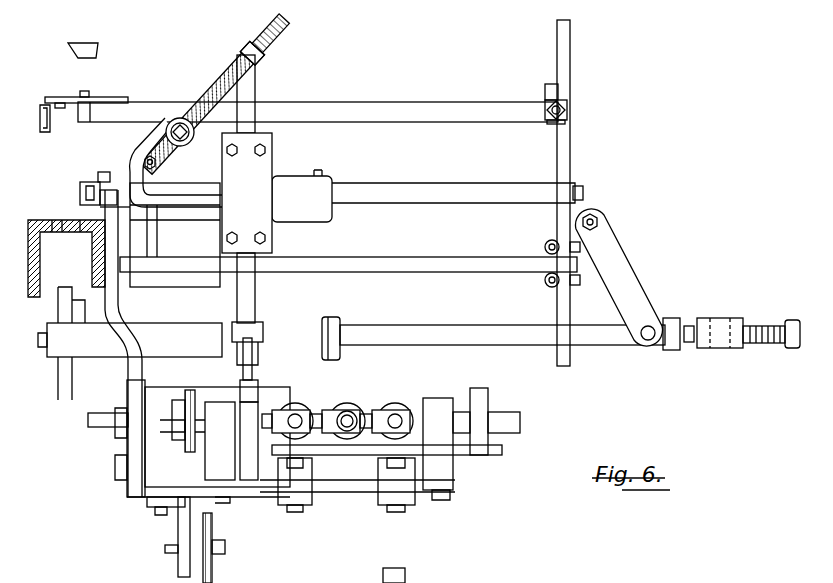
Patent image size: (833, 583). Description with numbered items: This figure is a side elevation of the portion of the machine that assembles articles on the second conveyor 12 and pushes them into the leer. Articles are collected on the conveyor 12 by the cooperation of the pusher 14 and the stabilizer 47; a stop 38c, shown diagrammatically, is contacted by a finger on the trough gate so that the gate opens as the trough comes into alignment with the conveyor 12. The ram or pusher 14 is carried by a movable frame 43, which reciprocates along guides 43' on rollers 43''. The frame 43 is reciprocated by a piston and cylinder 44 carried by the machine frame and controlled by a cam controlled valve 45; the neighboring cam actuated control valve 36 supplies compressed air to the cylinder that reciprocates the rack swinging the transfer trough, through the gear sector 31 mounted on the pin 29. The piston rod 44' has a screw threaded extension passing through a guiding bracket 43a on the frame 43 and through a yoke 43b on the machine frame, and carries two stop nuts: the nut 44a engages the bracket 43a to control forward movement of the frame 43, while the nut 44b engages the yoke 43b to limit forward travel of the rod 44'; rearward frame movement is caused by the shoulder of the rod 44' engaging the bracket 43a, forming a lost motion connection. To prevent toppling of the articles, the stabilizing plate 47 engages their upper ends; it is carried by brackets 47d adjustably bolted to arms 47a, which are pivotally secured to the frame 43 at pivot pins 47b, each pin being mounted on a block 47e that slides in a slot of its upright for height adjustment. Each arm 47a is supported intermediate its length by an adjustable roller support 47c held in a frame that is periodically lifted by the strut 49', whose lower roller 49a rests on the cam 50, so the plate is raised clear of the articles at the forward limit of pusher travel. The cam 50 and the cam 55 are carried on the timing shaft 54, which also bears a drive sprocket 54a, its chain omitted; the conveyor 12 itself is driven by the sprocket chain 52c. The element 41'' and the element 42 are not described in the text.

The stop 38c is at (90, 49).
The brackets 47d is at (110, 97).
The stabilizing plate 47 is at (43, 133).
The arms 47a is at (350, 103).
The block 47e is at (561, 87).
The pivot pins 47b is at (568, 108).
The adjustable support 47c is at (176, 118).
The pusher 14 is at (95, 184).
The second conveyor 12 is at (55, 220).
The movable frame 43 is at (457, 179).
The guides 43' is at (348, 250).
The rollers 43'' is at (542, 261).
The strut 49' is at (290, 189).
The roller 49a is at (256, 345).
The piston and cylinder 44 is at (328, 326).
The piston rod 44' is at (502, 351).
The guiding bracket 43a is at (618, 263).
The stop nut 44a is at (672, 320).
The yoke 43b is at (705, 349).
The stop nut 44b is at (737, 320).
The drive sprocket 54a is at (197, 435).
The cam 50 is at (250, 473).
The second sprocket chain 52c is at (214, 575).
The roller 42 is at (310, 405).
The cam actuated control valve 36 is at (362, 403).
The cam controlled valve 45 is at (408, 403).
The timing shaft 54 is at (505, 430).
The cam 55 is at (490, 402).
The gear sector 31 is at (365, 582).
The shaft 41'' is at (333, 573).
The pin 29 is at (432, 575).